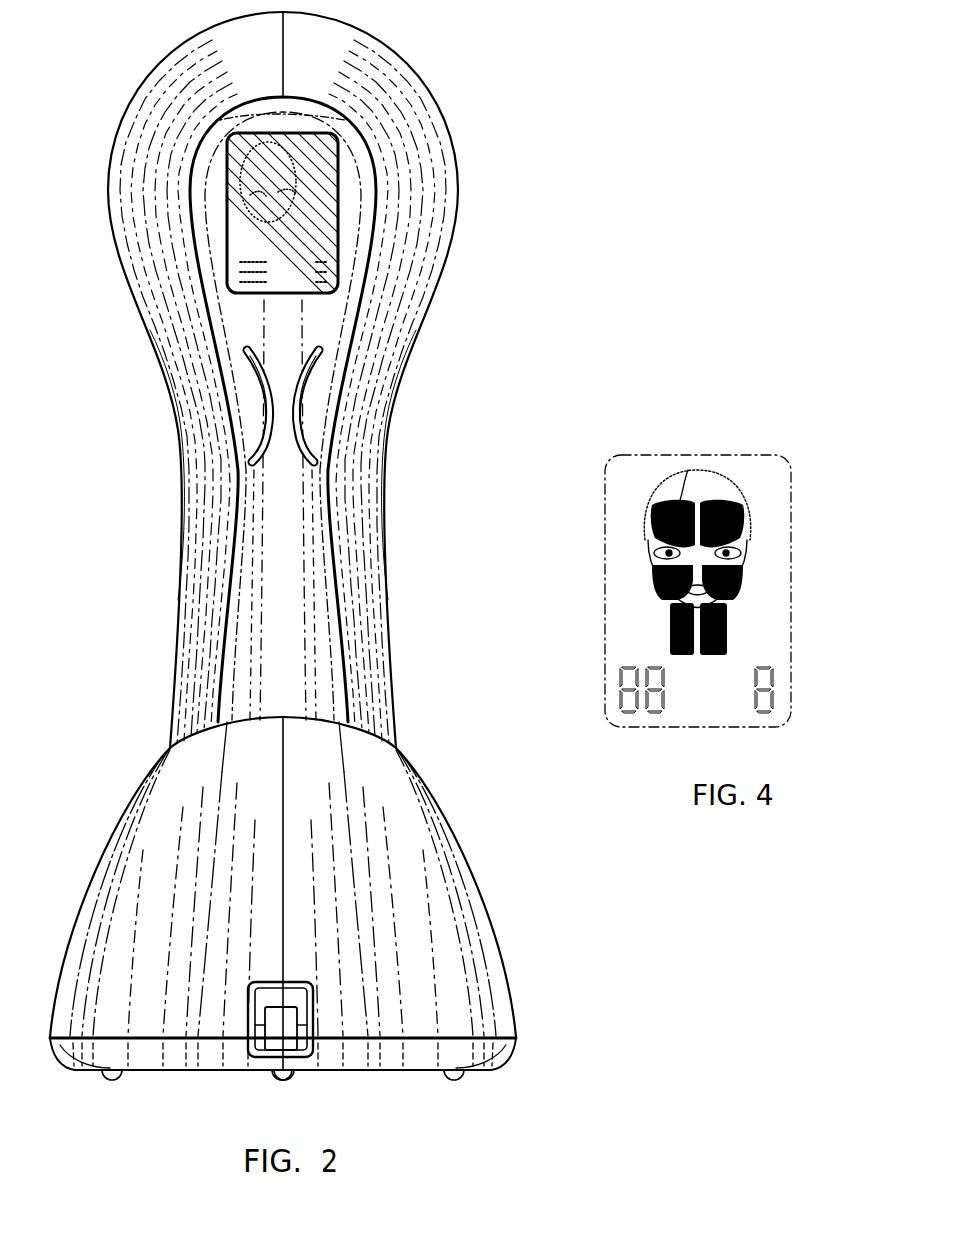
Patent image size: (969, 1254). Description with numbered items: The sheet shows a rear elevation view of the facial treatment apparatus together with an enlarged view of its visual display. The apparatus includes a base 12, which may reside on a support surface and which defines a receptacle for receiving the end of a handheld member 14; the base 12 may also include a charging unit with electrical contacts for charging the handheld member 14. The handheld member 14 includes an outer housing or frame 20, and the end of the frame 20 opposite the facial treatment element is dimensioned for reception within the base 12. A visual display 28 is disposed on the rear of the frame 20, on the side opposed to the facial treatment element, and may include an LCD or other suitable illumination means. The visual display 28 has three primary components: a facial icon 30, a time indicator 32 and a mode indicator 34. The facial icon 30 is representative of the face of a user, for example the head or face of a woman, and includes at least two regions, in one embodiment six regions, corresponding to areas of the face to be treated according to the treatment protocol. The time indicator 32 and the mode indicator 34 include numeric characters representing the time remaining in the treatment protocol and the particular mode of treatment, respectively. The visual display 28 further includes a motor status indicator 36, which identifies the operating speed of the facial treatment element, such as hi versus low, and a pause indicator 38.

In FIG. 2, the base 12 is at (455, 860).
In FIG. 2, the handheld member 14 is at (502, 192).
In FIG. 2, the outer housing or frame 20 is at (390, 338).
In FIG. 2, the visual display 28 is at (226, 253).
In FIG. 4, the facial icon 30 is at (765, 518).
In FIG. 4, the time indicator 32 is at (613, 680).
In FIG. 4, the mode indicator 34 is at (781, 687).
In FIG. 4, the motor status indicator 36 is at (744, 653).
In FIG. 4, the pause indicator 38 is at (690, 708).